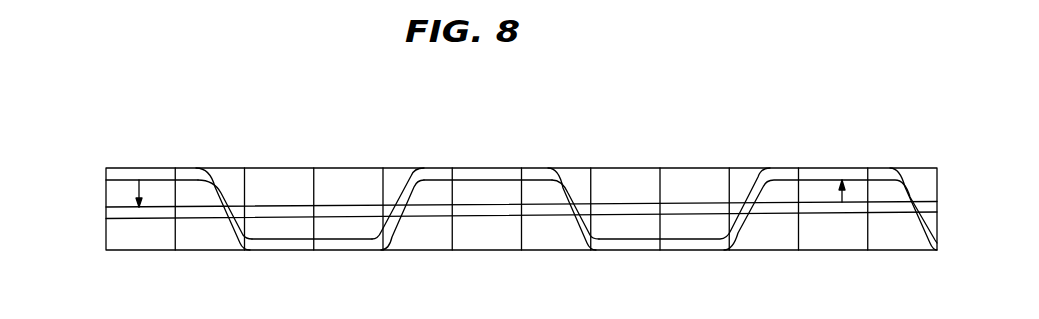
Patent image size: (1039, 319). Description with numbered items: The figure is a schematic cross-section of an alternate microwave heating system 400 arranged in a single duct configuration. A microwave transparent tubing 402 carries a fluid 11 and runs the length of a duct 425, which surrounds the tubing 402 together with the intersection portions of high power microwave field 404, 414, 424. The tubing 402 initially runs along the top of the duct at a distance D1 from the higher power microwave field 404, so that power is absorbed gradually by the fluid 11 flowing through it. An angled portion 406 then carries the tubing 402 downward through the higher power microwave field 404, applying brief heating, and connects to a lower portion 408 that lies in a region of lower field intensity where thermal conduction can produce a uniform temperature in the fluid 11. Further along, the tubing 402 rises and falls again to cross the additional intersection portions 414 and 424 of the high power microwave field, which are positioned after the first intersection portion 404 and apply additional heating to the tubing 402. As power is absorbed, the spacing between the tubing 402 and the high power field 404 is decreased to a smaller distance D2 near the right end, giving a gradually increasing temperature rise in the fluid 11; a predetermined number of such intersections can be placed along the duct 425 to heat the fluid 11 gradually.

The microwave heating system 400 is at (123, 69).
The fluid 11 is at (107, 170).
The microwave transparent tubing 402 is at (134, 171).
The portion 406 is at (218, 188).
The portion 408 is at (265, 252).
The higher power microwave field 404 is at (280, 213).
The intersection portion of high power microwave field 414 is at (397, 207).
The duct 425 is at (462, 168).
The intersection portion of high power microwave field 424 is at (585, 205).
The distance D1 is at (139, 188).
The distance D2 is at (842, 202).